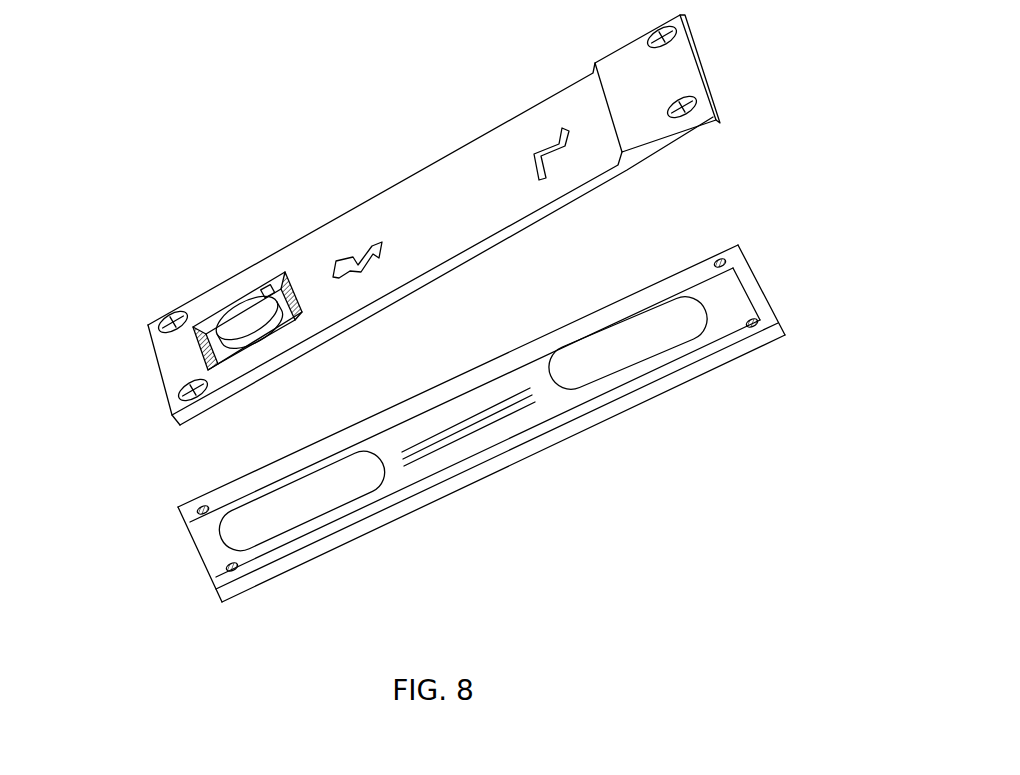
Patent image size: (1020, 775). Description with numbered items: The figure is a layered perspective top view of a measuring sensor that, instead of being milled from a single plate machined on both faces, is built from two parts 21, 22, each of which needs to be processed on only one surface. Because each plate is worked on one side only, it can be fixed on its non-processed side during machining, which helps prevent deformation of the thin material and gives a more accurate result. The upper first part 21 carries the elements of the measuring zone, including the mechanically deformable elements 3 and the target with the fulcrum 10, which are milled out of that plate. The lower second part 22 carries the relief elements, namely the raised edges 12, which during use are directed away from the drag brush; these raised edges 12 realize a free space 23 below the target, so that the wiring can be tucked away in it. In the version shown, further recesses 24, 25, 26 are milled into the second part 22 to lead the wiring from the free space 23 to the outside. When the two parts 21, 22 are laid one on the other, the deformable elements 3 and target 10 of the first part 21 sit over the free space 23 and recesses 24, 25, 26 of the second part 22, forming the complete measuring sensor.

The mechanically deformable elements 3 is at (203, 350).
The target with the fulcrum 10 is at (238, 317).
The raised edges 12 is at (280, 472).
The first part 21 is at (651, 147).
The second part 22 is at (665, 380).
The free space 23 is at (242, 540).
The recess 24 is at (463, 430).
The recess 25 is at (643, 350).
The recess 26 is at (750, 290).